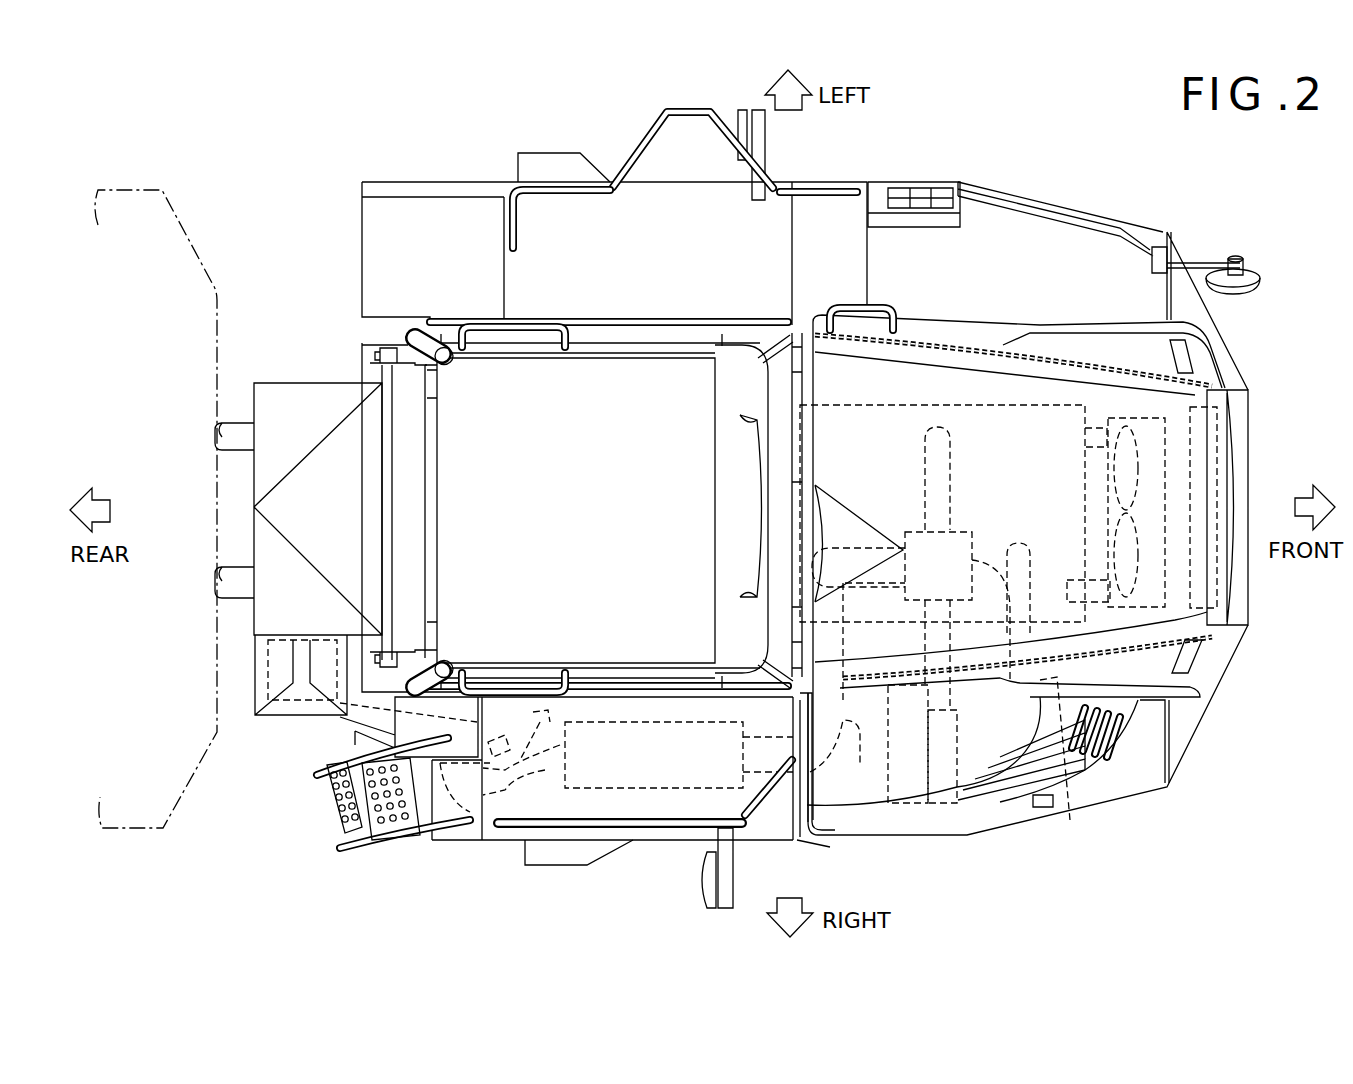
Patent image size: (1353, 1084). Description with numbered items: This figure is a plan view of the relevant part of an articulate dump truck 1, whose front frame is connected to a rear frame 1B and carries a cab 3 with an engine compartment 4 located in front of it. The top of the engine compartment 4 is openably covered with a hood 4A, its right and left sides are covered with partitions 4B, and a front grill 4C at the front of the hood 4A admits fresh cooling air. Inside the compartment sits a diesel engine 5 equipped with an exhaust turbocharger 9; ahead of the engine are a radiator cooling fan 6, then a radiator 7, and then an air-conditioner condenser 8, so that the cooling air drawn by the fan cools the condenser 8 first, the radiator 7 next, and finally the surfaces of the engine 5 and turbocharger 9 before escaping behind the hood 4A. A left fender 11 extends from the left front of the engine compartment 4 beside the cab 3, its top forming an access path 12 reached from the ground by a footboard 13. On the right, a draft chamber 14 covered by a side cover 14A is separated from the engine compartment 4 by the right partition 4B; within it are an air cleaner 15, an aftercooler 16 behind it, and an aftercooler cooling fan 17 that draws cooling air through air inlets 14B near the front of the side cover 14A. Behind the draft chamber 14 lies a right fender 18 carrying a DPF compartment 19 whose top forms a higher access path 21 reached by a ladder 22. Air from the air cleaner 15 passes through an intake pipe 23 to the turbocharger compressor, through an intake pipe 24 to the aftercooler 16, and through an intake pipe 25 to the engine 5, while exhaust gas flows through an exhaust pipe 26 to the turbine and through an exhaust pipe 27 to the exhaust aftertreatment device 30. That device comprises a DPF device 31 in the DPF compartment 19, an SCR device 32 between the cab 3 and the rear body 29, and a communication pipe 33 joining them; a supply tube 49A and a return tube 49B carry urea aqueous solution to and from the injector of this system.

The dump truck 1 is at (1079, 124).
The rear frame 1B is at (232, 408).
The cab 3 is at (633, 370).
The engine compartment 4 is at (970, 382).
The hood 4A is at (922, 370).
The partitions 4B is at (1058, 395).
The front grill 4C is at (1237, 480).
The engine 5 is at (850, 430).
The radiator cooling fan 6 is at (1130, 420).
The radiator 7 is at (1170, 395).
The air-conditioner condenser 8 is at (1217, 427).
The exhaust turbocharger 9 is at (918, 540).
The left fender 11 is at (562, 214).
The access path 12 is at (997, 235).
The footboard 13 is at (898, 190).
The draft chamber 14 is at (974, 770).
The side cover 14A is at (875, 793).
The air inlets 14B is at (1105, 722).
The air cleaner 15 is at (1063, 793).
The aftercooler 16 is at (905, 790).
The aftercooler cooling fan 17 is at (942, 800).
The right fender 18 is at (581, 806).
The DPF compartment 19 is at (655, 805).
The access path 21 is at (540, 805).
The ladder 22 is at (360, 850).
The intake pipe 23 is at (998, 565).
The intake pipe 24 is at (918, 637).
The intake pipe 25 is at (1027, 568).
The exhaust pipe 26 is at (947, 458).
The exhaust pipe 27 is at (842, 688).
The rear body 29 is at (193, 268).
The exhaust aftertreatment device 30 is at (512, 712).
The DPF device 31 is at (664, 730).
The SCR device 32 is at (268, 666).
The communication pipe 33 is at (443, 705).
The supply tube 49A is at (535, 710).
The return tube 49B is at (538, 716).